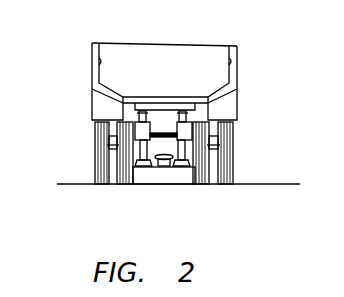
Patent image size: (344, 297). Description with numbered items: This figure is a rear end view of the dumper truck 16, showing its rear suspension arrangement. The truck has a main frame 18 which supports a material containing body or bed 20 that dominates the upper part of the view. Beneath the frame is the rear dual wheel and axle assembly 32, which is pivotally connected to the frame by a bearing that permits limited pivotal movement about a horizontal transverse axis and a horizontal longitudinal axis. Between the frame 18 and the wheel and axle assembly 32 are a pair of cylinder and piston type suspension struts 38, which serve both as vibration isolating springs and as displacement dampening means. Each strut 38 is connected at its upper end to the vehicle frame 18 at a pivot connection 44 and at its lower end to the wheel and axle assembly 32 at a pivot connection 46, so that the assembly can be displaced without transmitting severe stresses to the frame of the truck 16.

The dumper truck 16 is at (248, 50).
The main frame 18 is at (160, 107).
The material containing body 20 is at (237, 83).
The rear dual wheel and axle assembly 32 is at (162, 146).
The suspension struts 38 is at (143, 131).
The pivot connection 44 is at (169, 121).
The pivot connection 46 is at (145, 172).